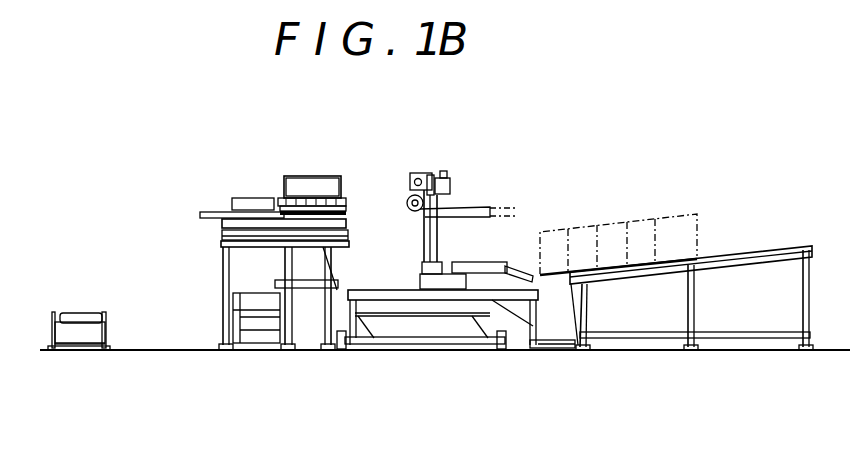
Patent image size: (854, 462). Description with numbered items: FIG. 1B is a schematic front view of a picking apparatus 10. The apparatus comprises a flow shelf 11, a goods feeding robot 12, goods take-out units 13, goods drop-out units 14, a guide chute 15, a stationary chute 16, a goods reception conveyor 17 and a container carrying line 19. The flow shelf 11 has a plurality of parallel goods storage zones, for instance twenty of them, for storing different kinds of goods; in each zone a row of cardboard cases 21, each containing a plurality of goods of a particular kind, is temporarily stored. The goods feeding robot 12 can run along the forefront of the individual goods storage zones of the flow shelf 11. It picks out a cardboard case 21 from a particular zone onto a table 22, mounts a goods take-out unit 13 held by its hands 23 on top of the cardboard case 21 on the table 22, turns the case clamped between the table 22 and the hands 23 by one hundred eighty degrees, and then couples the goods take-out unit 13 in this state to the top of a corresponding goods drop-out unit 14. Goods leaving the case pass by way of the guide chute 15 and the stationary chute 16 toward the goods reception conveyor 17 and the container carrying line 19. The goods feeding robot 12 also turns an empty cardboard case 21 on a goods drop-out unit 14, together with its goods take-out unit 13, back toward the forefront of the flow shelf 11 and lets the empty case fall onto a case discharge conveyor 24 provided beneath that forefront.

The picking apparatus 10 is at (233, 170).
The flow shelf 11 is at (745, 245).
The goods feeding robot 12 is at (452, 172).
The goods take-out unit 13 is at (347, 170).
The goods drop-out unit 14 is at (350, 216).
The guide chute 15 is at (346, 255).
The stationary chute 16 is at (303, 300).
The goods reception conveyor 17 is at (228, 282).
The container carrying line 19 is at (108, 318).
The cardboard case 21 is at (305, 178).
The table 22 is at (478, 261).
The hands 23 is at (475, 206).
The case discharge conveyor 24 is at (543, 351).